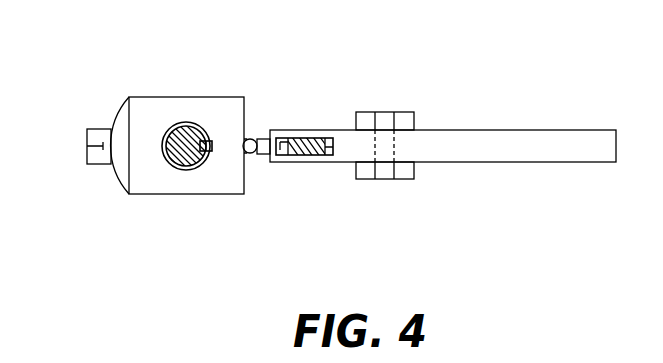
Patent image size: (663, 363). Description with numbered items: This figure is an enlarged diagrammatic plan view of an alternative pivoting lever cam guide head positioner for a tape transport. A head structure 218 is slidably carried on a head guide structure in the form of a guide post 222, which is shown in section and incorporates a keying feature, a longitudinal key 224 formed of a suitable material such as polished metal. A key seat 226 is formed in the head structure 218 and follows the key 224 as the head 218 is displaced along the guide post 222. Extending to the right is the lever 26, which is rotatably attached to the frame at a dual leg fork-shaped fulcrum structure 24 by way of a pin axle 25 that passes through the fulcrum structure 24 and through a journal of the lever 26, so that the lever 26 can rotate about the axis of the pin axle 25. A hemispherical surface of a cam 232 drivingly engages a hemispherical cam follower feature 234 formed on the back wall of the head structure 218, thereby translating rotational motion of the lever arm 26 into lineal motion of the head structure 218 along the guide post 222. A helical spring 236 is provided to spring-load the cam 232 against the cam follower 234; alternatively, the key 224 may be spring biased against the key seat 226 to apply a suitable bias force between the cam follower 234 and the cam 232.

The head structure 218 is at (119, 127).
The guide post 222 is at (181, 167).
The longitudinal key 224 is at (201, 124).
The key seat 226 is at (213, 152).
The cam 232 is at (250, 139).
The cam follower feature 234 is at (246, 142).
The helical spring 236 is at (288, 140).
The fulcrum structure 24 is at (400, 180).
The pin axle 25 is at (393, 112).
The lever 26 is at (506, 137).